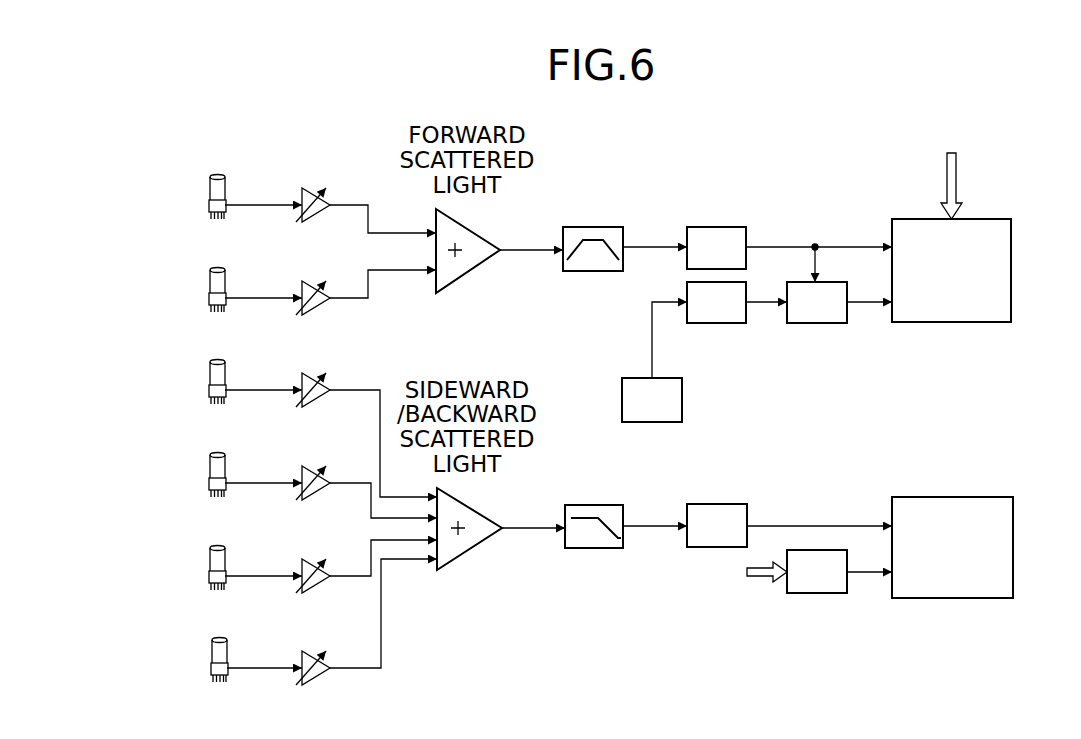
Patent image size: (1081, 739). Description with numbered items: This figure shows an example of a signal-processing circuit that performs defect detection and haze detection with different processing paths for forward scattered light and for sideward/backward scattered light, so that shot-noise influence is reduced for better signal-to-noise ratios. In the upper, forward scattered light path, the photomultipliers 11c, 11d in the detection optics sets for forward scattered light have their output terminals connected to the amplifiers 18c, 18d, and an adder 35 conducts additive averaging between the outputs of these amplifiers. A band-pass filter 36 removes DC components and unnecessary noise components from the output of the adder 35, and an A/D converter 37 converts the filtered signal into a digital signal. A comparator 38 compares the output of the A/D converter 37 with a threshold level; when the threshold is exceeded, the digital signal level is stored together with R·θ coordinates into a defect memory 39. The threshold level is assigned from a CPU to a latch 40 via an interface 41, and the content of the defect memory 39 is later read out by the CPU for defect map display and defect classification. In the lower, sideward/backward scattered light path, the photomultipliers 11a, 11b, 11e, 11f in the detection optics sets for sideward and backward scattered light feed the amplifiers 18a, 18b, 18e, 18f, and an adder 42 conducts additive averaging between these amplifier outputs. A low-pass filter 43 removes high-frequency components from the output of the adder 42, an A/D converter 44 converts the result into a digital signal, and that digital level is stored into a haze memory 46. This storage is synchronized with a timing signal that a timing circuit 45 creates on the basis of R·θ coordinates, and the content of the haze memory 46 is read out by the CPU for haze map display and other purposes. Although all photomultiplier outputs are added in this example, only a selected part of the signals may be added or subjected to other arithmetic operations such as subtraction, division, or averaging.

The photomultiplier 11a is at (210, 375).
The photomultiplier 11b is at (210, 468).
The photomultiplier 11c is at (210, 190).
The photomultiplier 11d is at (210, 283).
The photomultiplier 11e is at (210, 561).
The photomultiplier 11f is at (212, 653).
The amplifier 18a is at (302, 375).
The amplifier 18b is at (302, 468).
The amplifier 18c is at (302, 190).
The amplifier 18d is at (302, 283).
The amplifier 18e is at (302, 561).
The amplifier 18f is at (302, 653).
The adder 35 is at (457, 295).
The band-pass filter 36 is at (585, 272).
The A/D converter 37 is at (715, 227).
The comparator 38 is at (815, 323).
The defect memory 39 is at (956, 322).
The latch 40 is at (730, 323).
The interface 41 is at (622, 399).
The adder 42 is at (457, 571).
The low-pass filter 43 is at (590, 505).
The A/D converter 44 is at (716, 504).
The timing circuit 45 is at (822, 593).
The haze memory 46 is at (951, 598).